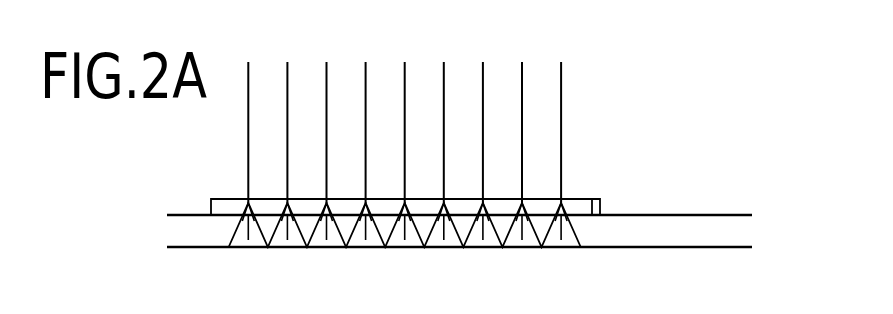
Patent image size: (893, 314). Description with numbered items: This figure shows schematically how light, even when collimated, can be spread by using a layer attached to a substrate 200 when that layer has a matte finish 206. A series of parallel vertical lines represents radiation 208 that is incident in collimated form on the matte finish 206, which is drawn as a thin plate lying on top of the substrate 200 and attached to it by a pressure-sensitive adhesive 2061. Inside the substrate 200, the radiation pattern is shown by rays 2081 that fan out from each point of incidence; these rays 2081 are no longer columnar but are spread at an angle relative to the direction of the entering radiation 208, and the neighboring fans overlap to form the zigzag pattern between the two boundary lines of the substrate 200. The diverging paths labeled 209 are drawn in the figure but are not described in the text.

The substrate 200 is at (725, 232).
The matte finish layer 206 is at (592, 198).
The pressure-sensitive adhesive 2061 is at (593, 206).
The radiation 208 is at (404, 112).
The rays 2081 is at (236, 228).
The diverging beam paths 209 is at (577, 234).